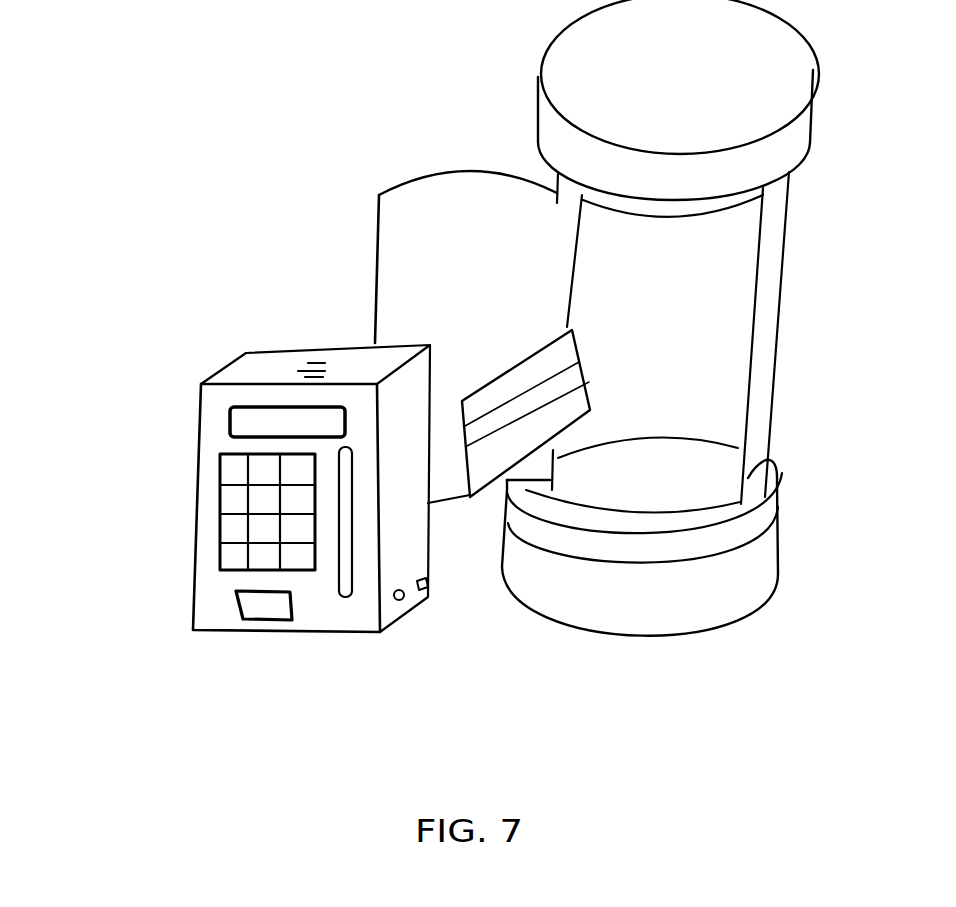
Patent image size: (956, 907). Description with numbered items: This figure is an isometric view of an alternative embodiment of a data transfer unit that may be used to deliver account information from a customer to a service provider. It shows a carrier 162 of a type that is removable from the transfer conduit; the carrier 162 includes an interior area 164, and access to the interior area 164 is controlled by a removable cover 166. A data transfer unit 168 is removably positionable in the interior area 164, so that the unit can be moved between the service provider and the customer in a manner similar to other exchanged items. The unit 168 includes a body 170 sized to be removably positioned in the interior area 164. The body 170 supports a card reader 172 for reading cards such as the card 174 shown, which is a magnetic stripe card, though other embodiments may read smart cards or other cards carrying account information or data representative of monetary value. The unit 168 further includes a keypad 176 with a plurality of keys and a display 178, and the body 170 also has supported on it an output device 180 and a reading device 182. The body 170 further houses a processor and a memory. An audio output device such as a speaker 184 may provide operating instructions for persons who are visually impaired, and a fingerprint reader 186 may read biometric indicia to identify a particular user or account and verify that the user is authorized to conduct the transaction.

The carrier 162 is at (540, 82).
The interior area 164 is at (717, 353).
The removable cover 166 is at (423, 180).
The data transfer unit 168 is at (150, 342).
The body 170 is at (245, 357).
The card reader 172 is at (340, 585).
The card 174 is at (591, 400).
The keypad 176 is at (220, 521).
The display 178 is at (227, 427).
The output device 180 is at (402, 603).
The reading device 182 is at (430, 592).
The speaker 184 is at (313, 340).
The fingerprint reader 186 is at (255, 620).